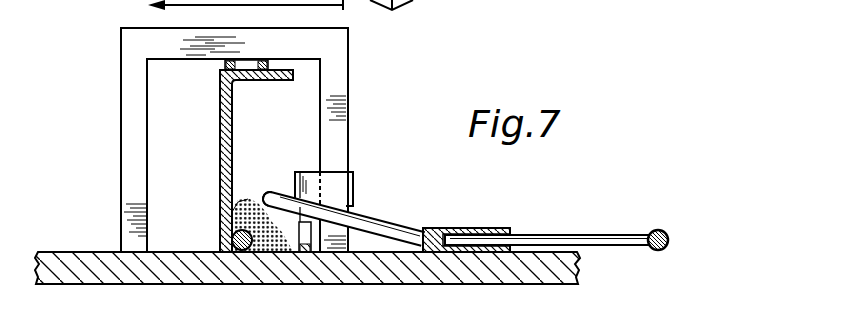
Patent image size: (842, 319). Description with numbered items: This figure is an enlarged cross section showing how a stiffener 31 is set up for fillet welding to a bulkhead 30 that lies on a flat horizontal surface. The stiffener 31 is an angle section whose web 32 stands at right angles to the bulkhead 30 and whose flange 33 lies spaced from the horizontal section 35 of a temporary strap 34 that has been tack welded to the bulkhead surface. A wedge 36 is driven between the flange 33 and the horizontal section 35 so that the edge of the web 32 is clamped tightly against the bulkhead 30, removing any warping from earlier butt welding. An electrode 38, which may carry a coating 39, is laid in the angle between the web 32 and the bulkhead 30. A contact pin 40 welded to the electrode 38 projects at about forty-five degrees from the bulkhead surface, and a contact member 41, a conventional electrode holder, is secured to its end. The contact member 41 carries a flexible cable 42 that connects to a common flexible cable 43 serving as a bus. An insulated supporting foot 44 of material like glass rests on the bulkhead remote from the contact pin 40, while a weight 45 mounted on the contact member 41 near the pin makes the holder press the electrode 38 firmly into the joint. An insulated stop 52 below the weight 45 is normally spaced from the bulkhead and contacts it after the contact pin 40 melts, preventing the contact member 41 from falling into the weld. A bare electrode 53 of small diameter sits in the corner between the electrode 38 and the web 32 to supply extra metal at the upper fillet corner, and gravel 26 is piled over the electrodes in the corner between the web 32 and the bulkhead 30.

The gravel 26 is at (243, 203).
The bulkhead 30 is at (531, 268).
The stiffener 31 is at (220, 83).
The web 32 is at (220, 169).
The flange 33 is at (262, 79).
The temporary strap 34 is at (133, 97).
The horizontal section 35 is at (178, 40).
The wedge 36 is at (253, 66).
The electrode 38 is at (229, 238).
The coating 39 is at (243, 253).
The contact pin 40 is at (253, 232).
The contact member 41 is at (368, 227).
The flexible cable 42 is at (558, 234).
The common flexible cable 43 is at (664, 233).
The insulated supporting foot 44 is at (452, 258).
The weight 45 is at (355, 187).
The insulated stop 52 is at (307, 253).
The bare electrode 53 is at (229, 213).